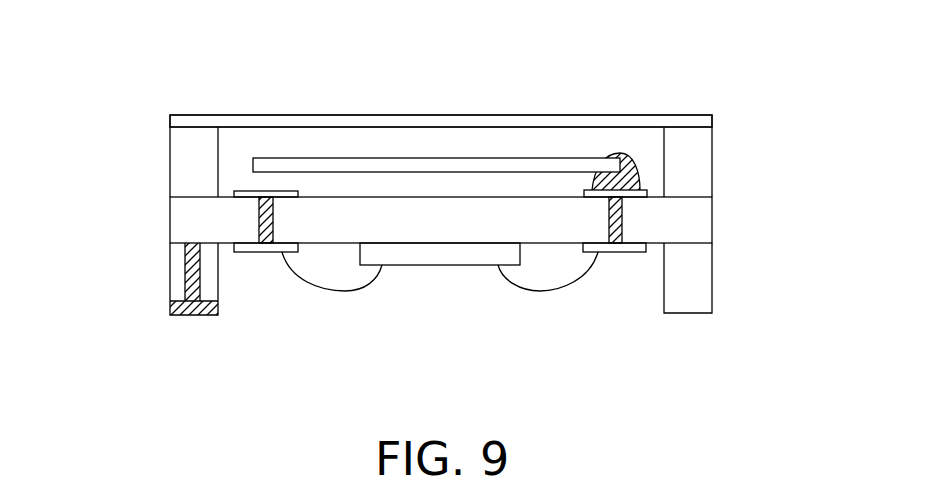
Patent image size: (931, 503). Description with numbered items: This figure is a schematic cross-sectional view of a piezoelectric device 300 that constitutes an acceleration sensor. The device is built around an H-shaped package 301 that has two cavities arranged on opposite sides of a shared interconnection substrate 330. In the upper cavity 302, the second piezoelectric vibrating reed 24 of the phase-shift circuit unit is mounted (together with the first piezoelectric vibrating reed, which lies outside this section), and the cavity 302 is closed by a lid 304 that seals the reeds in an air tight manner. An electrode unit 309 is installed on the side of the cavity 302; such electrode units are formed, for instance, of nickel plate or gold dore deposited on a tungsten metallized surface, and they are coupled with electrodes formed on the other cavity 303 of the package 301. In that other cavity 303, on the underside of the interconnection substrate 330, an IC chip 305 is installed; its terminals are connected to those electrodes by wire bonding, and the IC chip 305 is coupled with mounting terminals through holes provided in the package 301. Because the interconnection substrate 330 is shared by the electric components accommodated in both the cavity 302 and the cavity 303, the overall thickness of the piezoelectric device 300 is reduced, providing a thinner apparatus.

The piezoelectric device 300 is at (766, 53).
The H-shaped package 301 is at (715, 153).
The lid 304 is at (180, 119).
The interconnection substrate 330 is at (178, 219).
The electrode unit 309 is at (640, 192).
The cavity 302 is at (595, 147).
The second piezoelectric vibrating reed 24 is at (487, 155).
The IC chip 305 is at (442, 255).
The cavity 303 is at (630, 272).